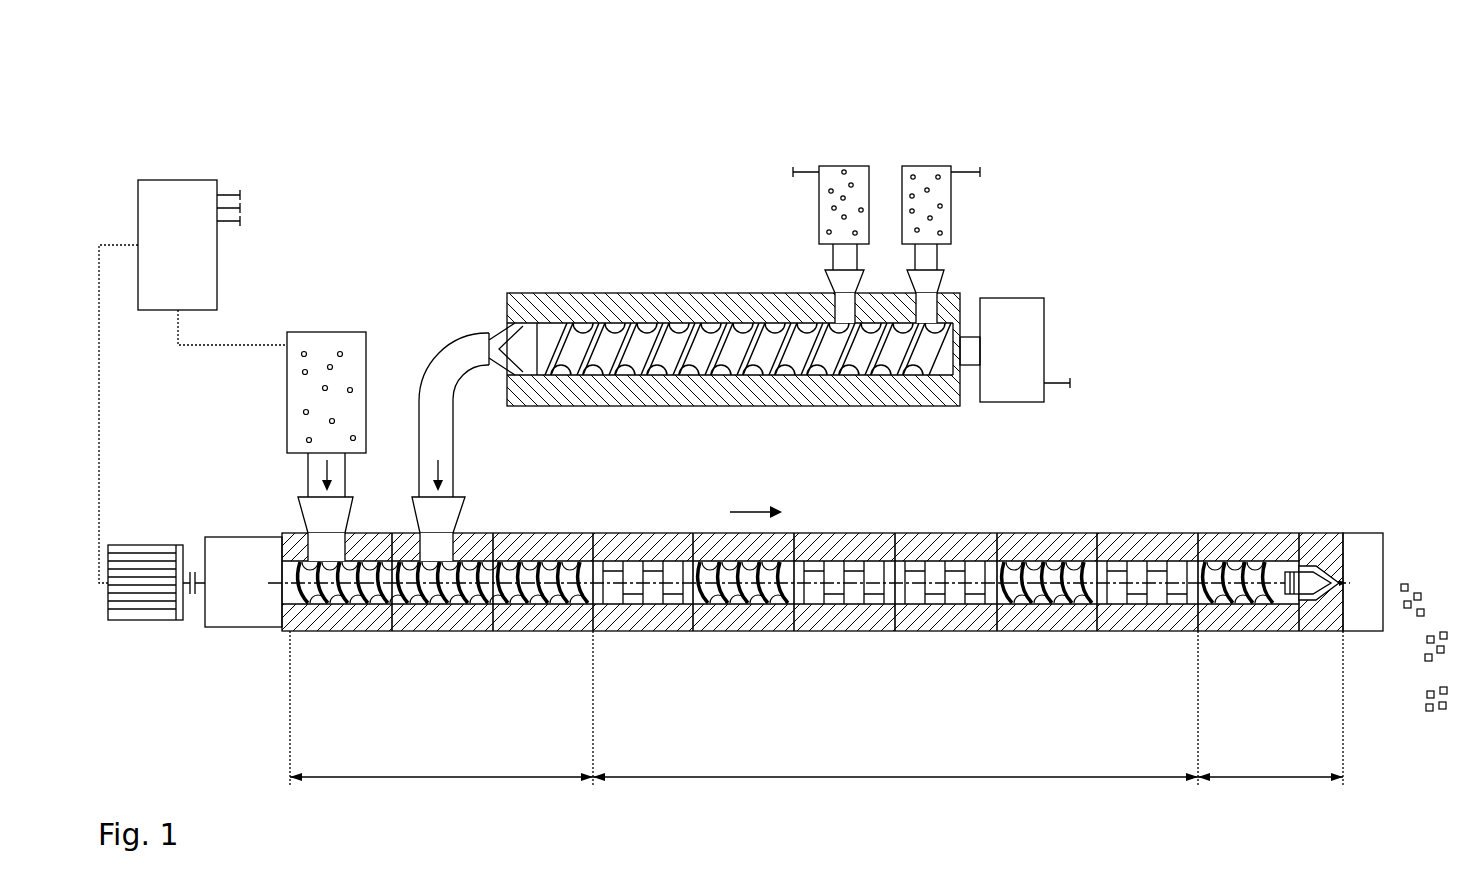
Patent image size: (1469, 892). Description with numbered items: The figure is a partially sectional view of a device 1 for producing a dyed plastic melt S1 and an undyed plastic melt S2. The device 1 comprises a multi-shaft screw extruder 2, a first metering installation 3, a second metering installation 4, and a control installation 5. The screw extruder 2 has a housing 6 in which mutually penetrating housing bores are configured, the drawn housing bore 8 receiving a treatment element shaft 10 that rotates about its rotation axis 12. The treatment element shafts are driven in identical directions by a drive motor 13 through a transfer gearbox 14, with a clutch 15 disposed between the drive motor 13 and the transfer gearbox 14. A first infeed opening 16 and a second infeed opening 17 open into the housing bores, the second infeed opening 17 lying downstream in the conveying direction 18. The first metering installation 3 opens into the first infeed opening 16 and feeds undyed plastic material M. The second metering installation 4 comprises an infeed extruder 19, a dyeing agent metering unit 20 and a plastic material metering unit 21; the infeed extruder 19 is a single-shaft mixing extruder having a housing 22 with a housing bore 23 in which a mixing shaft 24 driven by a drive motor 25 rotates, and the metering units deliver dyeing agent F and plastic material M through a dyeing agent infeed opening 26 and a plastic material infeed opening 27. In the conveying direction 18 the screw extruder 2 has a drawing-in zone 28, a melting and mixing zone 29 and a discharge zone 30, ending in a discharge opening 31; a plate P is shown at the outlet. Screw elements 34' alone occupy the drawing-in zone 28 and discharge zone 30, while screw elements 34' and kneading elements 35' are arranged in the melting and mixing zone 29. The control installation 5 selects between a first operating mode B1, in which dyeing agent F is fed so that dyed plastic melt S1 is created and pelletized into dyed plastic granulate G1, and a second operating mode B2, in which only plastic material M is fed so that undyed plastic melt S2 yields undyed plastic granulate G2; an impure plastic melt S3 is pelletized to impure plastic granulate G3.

The device 1 is at (1075, 162).
The multi-shaft screw extruder 2 is at (809, 529).
The first metering installation 3 is at (337, 326).
The second metering installation 4 is at (744, 315).
The control installation 5 is at (210, 258).
The housing 6 is at (853, 528).
The housing bore 8 is at (1010, 563).
The treatment element shaft 10 is at (631, 548).
The rotation axis 12 is at (1222, 578).
The drive motor 13 is at (132, 545).
The transfer gearbox 14 is at (253, 548).
The clutch 15 is at (193, 572).
The first infeed opening 16 is at (330, 557).
The second infeed opening 17 is at (433, 557).
The conveying direction 18 is at (746, 508).
The infeed extruder 19 is at (733, 302).
The dyeing agent metering unit 20 is at (825, 200).
The plastic material metering unit 21 is at (945, 222).
The housing 22 is at (570, 293).
The housing bore 23 is at (677, 327).
The mixing shaft 24 is at (727, 337).
The drive motor 25 is at (992, 396).
The dyeing agent infeed opening 26 is at (838, 335).
The plastic material infeed opening 27 is at (935, 340).
The drawing-in zone 28 is at (441, 708).
The melting and mixing zone 29 is at (895, 708).
The discharge zone 30 is at (1270, 708).
The discharge opening 31 is at (1343, 582).
The screw elements 34' is at (785, 636).
The kneading elements 35' is at (895, 636).
The perforated plate P is at (1367, 545).
The dyed plastic granulate G1 is at (1429, 711).
The undyed plastic granulate G2 is at (1404, 584).
The impure plastic granulate G3 is at (1432, 637).
The dyed plastic melt S1 is at (1343, 584).
The undyed plastic melt S2 is at (1367, 745).
The impure plastic melt S3 is at (1371, 719).
The undyed plastic material M is at (330, 365).
The dyeing agent F is at (844, 170).
The first operating mode B1 is at (174, 215).
The second operating mode B2 is at (174, 280).